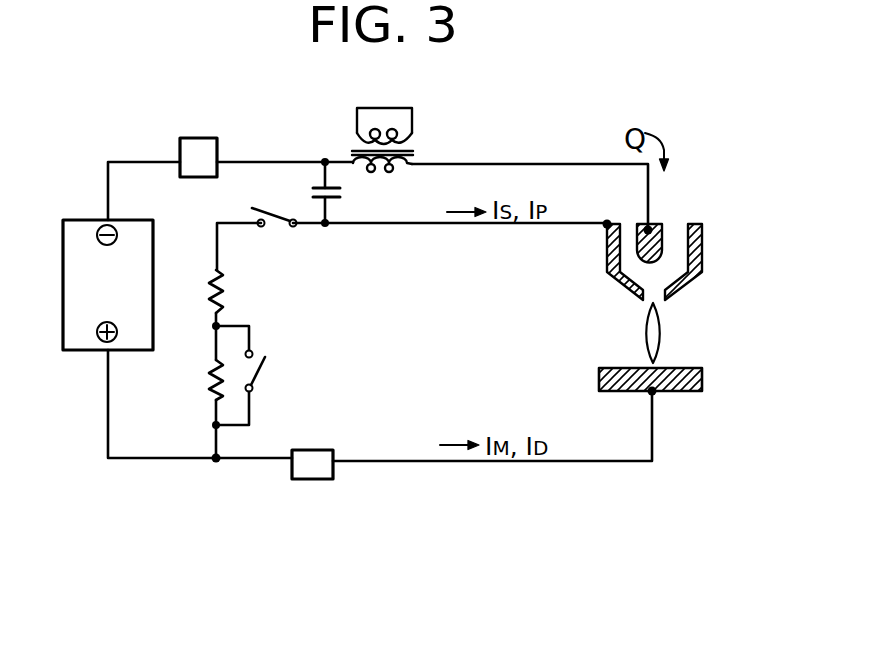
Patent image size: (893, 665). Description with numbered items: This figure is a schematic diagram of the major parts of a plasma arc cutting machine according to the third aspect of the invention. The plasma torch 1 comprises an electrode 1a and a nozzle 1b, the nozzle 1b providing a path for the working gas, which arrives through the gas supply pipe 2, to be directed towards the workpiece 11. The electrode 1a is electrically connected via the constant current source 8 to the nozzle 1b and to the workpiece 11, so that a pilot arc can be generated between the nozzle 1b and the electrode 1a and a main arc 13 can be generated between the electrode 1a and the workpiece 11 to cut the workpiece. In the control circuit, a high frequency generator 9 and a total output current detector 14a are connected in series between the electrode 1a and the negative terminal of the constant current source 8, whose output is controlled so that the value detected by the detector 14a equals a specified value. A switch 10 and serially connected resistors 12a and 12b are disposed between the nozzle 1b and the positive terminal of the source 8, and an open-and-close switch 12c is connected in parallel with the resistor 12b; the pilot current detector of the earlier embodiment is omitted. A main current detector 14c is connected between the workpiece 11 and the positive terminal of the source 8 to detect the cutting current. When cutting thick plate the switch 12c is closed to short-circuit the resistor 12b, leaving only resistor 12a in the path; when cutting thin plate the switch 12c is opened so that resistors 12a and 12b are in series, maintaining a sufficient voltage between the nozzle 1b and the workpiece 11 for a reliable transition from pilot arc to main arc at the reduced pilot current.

The plasma torch 1 is at (711, 205).
The electrode 1a is at (663, 238).
The nozzle 1b is at (702, 268).
The gas supply pipe 2 is at (680, 216).
The constant current source 8 is at (63, 293).
The high frequency generator 9 is at (413, 118).
The switch 10 is at (276, 226).
The workpiece 11 is at (686, 392).
The resistor 12a is at (222, 290).
The resistor 12b is at (209, 372).
The open-and-close switch 12c is at (258, 372).
The main arc 13 is at (661, 333).
The total output current detector 14a is at (210, 105).
The main current detector 14c is at (320, 479).